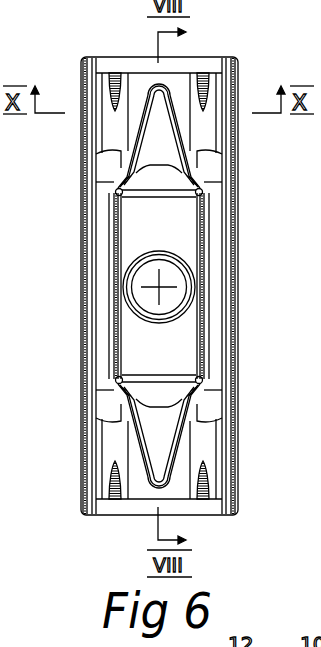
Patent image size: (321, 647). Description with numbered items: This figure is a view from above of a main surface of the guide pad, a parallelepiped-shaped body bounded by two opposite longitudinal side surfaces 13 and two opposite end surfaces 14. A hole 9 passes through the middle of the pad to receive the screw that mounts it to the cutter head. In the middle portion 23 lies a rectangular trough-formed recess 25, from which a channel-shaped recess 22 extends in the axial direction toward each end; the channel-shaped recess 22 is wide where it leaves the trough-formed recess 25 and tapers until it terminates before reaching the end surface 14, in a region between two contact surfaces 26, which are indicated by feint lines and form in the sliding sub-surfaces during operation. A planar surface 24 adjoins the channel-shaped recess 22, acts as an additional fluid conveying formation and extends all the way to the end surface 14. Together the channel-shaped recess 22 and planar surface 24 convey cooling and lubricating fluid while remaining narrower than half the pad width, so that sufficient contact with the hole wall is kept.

The hole 9 is at (149, 274).
The longitudinal side surface 13 is at (80, 279).
The end surface 14 is at (108, 58).
The channel-shaped recess 22 is at (158, 122).
The middle portion 23 is at (266, 185).
The planar surface 24 is at (172, 72).
The rectangular trough-formed recess 25 is at (182, 222).
The contact surface 26 is at (115, 82).